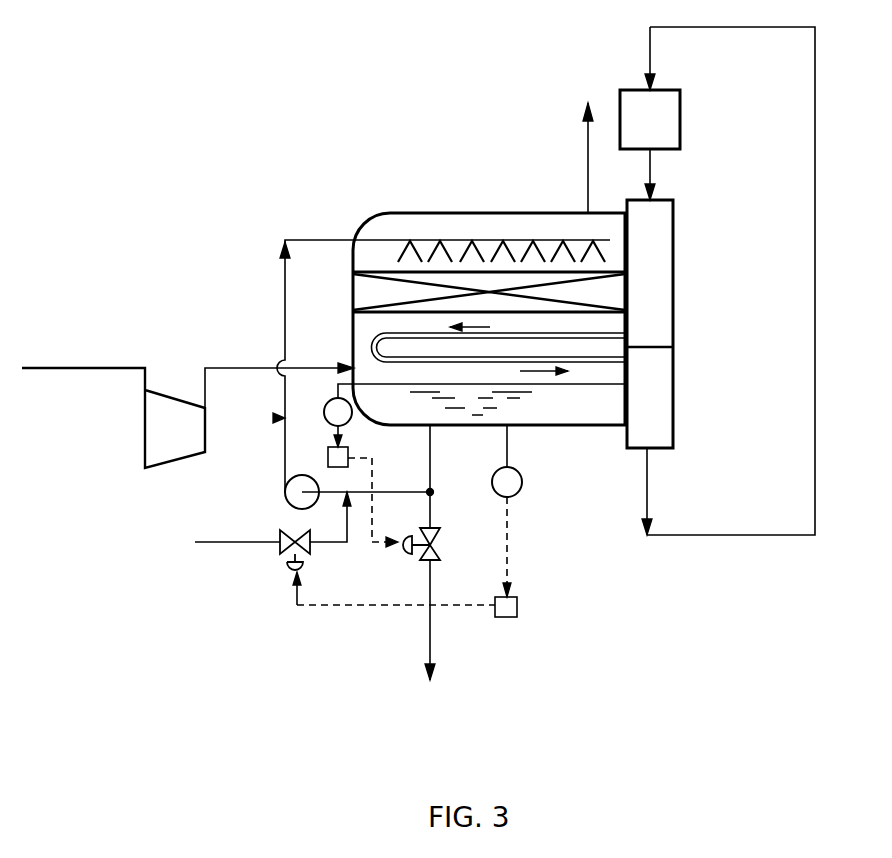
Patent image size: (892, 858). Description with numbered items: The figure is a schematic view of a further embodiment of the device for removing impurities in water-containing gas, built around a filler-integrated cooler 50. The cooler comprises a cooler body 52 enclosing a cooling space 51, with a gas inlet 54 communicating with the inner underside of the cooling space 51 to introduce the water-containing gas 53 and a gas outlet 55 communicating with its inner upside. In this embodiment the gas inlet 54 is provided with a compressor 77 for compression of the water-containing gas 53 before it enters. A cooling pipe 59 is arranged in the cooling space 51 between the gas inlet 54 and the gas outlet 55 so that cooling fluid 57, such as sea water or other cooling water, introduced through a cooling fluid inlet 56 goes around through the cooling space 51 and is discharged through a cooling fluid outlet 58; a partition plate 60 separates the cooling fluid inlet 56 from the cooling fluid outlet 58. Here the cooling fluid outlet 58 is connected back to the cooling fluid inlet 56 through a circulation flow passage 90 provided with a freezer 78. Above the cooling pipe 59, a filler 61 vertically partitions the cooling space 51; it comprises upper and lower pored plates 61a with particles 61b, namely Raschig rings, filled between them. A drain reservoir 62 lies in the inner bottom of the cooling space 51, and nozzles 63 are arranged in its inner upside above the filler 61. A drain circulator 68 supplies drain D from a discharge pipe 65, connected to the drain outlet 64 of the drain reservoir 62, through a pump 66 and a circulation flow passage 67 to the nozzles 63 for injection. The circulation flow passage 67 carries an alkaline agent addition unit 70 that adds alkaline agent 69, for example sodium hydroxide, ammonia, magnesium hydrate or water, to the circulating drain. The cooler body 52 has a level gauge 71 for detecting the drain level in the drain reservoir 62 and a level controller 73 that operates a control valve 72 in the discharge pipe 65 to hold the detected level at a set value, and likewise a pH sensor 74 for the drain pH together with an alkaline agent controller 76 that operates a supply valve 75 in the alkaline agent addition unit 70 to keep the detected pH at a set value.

The filler-integrated cooler 50 is at (342, 222).
The cooling space 51 is at (447, 225).
The cooler body 52 is at (495, 212).
The water-containing gas 53 is at (220, 367).
The gas inlet 54 is at (352, 365).
The gas outlet 55 is at (587, 212).
The cooling fluid inlet 56 is at (673, 200).
The cooling fluid 57 is at (650, 163).
The cooling fluid outlet 58 is at (662, 448).
The cooling pipe 59 is at (372, 335).
The partition plate 60 is at (645, 347).
The filler 61 is at (752, 250).
The pored plates 61a is at (605, 272).
The particles 61b is at (592, 295).
The drain reservoir 62 is at (558, 405).
The nozzles 63 is at (425, 240).
The drain outlet 64 is at (432, 433).
The discharge pipe 65 is at (431, 507).
The pump 66 is at (286, 497).
The circulation flow passage 67 is at (283, 280).
The drain circulator 68 is at (276, 418).
The alkaline agent 69 is at (225, 540).
The alkaline agent addition unit 70 is at (283, 584).
The level gauge 71 is at (325, 420).
The control valve 72 is at (440, 555).
The level controller 73 is at (348, 450).
The pH sensor 74 is at (510, 497).
The supply valve 75 is at (303, 565).
The alkaline agent controller 76 is at (517, 610).
The compressor 77 is at (148, 443).
The freezer 78 is at (682, 90).
The circulation flow passage 90 is at (743, 537).